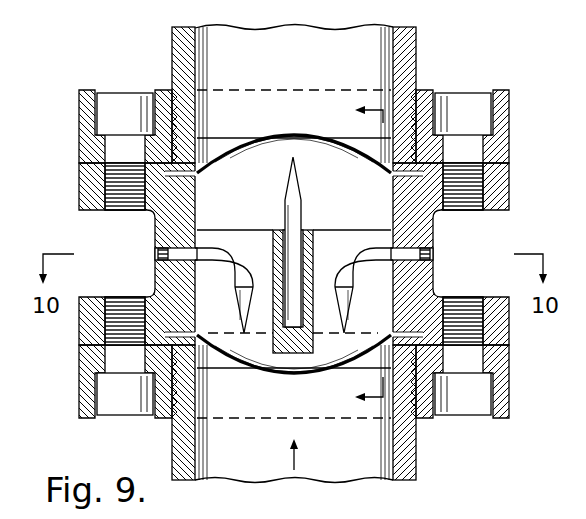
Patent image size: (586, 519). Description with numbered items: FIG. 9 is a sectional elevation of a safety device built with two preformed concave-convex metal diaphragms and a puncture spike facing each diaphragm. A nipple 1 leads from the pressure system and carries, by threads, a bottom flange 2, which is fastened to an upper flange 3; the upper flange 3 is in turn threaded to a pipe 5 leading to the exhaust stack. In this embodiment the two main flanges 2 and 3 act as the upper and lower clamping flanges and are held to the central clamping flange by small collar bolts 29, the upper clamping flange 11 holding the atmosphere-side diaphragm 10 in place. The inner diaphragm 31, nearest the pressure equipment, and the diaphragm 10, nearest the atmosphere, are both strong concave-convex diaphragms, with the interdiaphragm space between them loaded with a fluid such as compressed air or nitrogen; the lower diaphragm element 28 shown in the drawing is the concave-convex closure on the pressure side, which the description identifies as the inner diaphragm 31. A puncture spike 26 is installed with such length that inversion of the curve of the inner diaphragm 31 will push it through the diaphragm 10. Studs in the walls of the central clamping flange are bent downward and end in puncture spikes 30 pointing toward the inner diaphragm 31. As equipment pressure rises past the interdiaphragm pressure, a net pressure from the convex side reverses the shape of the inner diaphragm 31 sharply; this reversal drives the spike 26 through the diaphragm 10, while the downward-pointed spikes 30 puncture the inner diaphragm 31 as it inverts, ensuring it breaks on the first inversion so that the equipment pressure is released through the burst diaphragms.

The nipple 1 is at (416, 466).
The bottom flange 2 is at (509, 388).
The upper flange 3 is at (509, 124).
The pipe 5 is at (416, 48).
The diaphragm 10 is at (300, 137).
The upper clamping flange 11 is at (356, 255).
The puncture spike 26 is at (303, 213).
The lower rupture disc 28 is at (237, 348).
The collar bolts 29 is at (470, 96).
The puncture spikes 30 is at (248, 275).
The inner diaphragm 31 is at (300, 375).